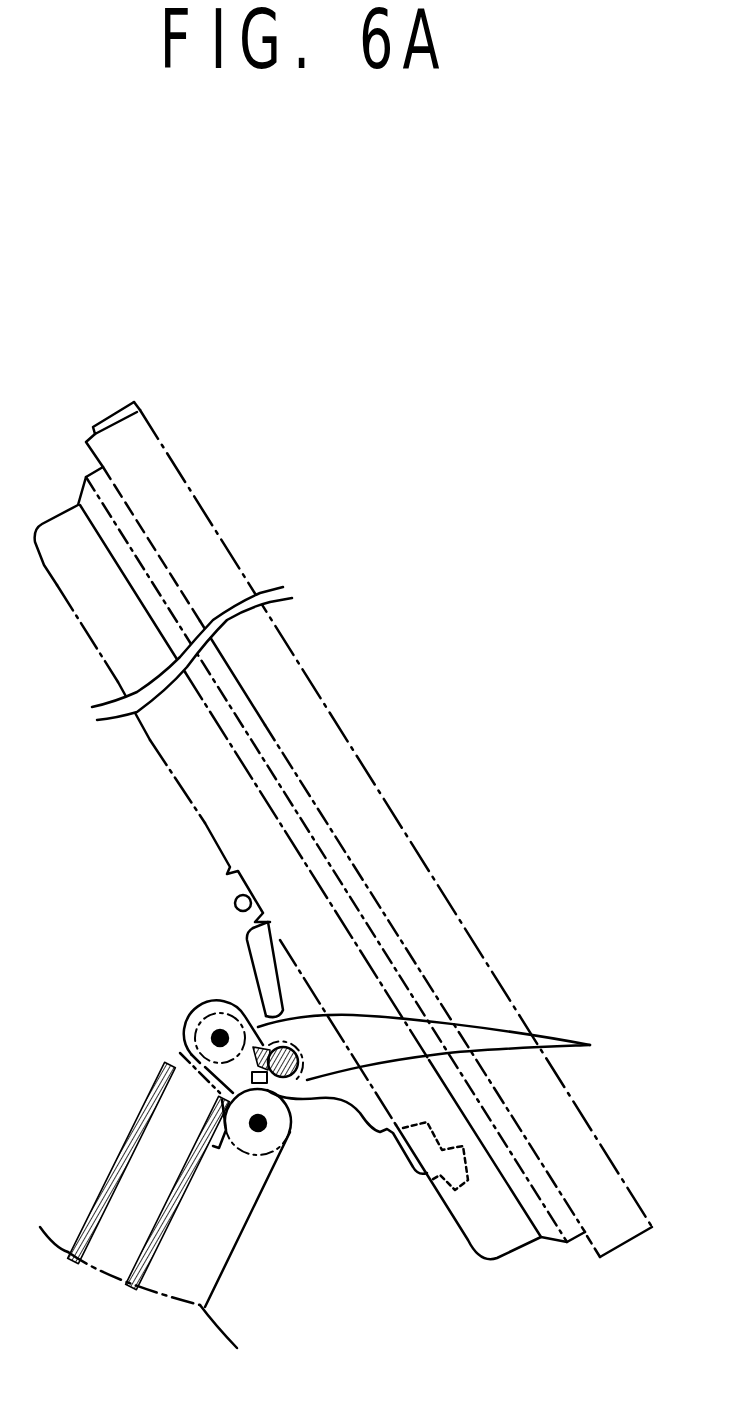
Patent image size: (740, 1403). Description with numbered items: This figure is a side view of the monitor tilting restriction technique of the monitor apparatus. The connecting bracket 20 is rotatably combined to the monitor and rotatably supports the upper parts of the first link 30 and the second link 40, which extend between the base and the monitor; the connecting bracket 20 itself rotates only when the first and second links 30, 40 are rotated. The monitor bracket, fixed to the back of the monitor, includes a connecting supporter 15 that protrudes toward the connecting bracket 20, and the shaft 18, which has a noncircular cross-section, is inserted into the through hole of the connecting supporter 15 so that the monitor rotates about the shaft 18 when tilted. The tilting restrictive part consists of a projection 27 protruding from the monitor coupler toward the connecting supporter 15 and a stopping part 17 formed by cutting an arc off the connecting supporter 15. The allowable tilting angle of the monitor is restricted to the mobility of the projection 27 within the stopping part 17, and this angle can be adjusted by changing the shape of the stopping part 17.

The connecting supporter 15 is at (365, 1103).
The stopping part 17 is at (447, 1047).
The shaft 18 is at (252, 1059).
The connecting bracket 20 is at (186, 1032).
The projection 27 is at (220, 1006).
The first link 30 is at (212, 1247).
The second link 40 is at (127, 1178).